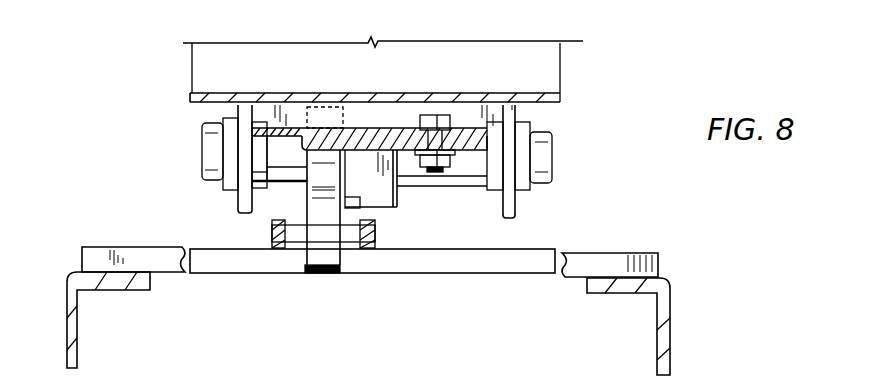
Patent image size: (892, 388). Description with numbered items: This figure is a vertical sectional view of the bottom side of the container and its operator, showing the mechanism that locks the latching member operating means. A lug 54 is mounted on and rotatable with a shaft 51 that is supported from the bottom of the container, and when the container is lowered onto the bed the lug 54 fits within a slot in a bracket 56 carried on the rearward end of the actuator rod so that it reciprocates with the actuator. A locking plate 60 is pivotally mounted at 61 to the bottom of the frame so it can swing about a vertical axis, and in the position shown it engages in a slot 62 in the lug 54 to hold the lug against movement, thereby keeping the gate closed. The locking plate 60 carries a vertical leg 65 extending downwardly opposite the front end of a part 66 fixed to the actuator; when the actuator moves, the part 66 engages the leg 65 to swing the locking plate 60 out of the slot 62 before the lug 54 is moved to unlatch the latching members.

The shaft 51 is at (545, 188).
The lug 54 is at (325, 273).
The bracket 56 is at (295, 247).
The locking plate 60 is at (407, 150).
The pivot 61 is at (445, 115).
The slot 62 is at (327, 145).
The vertical leg 65 is at (385, 203).
The part 66 is at (360, 248).